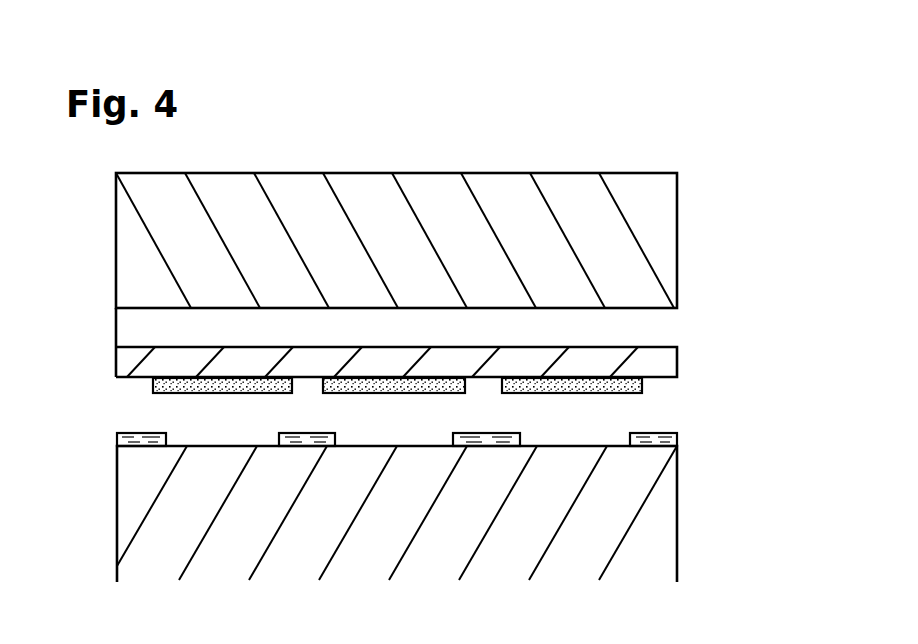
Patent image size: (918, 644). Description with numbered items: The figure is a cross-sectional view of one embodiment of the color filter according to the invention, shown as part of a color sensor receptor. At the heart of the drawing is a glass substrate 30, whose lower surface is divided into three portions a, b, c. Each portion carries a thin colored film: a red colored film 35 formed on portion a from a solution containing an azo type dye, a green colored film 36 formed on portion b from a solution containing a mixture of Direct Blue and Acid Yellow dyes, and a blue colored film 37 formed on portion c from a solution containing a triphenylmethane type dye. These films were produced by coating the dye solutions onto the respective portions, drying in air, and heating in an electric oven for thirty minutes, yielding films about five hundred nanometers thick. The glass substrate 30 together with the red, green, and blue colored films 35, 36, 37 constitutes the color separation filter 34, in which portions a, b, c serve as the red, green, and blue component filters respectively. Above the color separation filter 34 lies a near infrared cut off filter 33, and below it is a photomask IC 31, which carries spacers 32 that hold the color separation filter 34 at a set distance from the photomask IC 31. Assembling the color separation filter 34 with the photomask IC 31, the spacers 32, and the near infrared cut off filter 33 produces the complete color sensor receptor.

The near infrared cut off filter 33 is at (677, 237).
The glass substrate 30 is at (660, 365).
The red colored film 35 is at (162, 394).
The green colored film 36 is at (392, 394).
The blue colored film 37 is at (562, 393).
The photomask IC 31 is at (663, 528).
The spacers 32 is at (677, 440).
The color separation filter 34 is at (808, 318).
The portion (a) of the glass substrate a is at (267, 378).
The portion (b) of the glass substrate b is at (418, 378).
The portion (c) of the glass substrate c is at (583, 377).